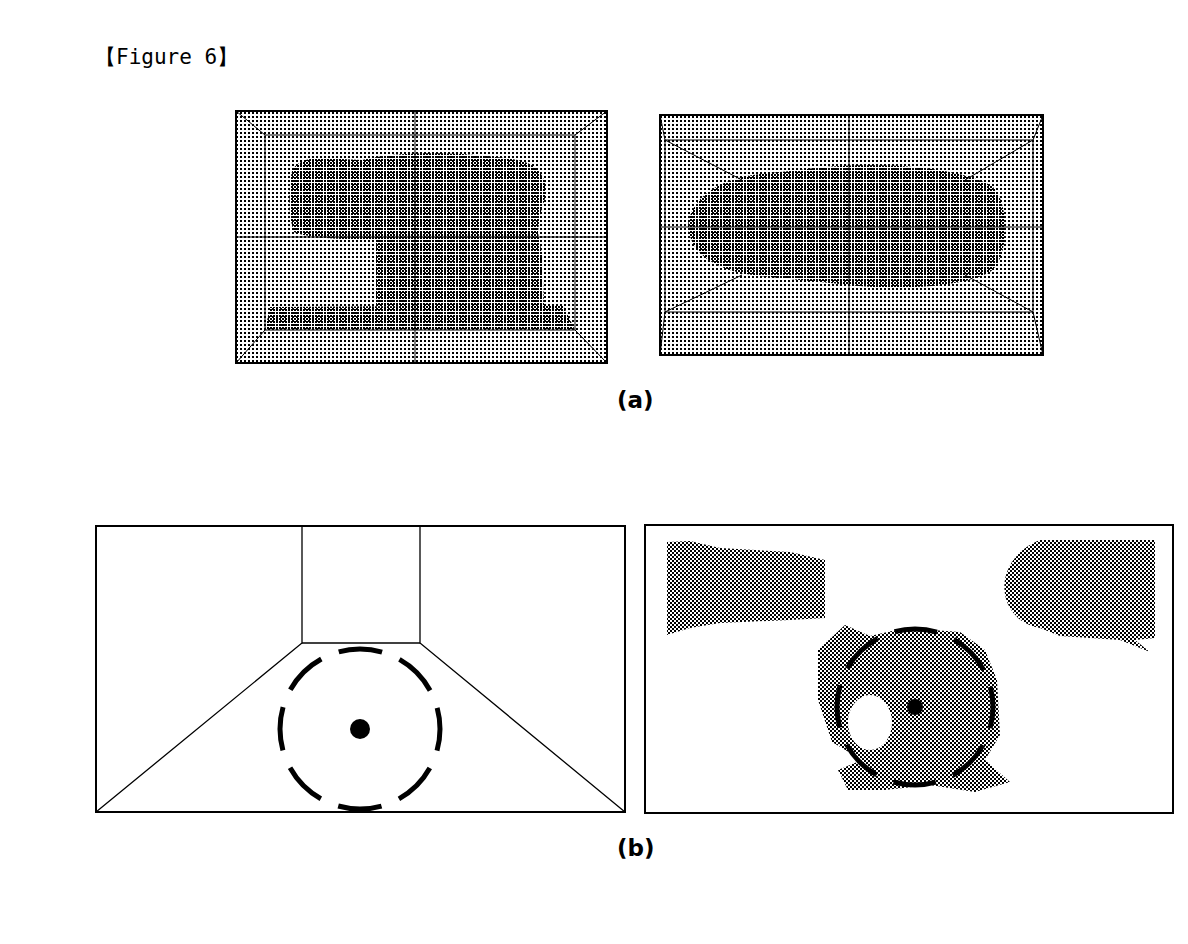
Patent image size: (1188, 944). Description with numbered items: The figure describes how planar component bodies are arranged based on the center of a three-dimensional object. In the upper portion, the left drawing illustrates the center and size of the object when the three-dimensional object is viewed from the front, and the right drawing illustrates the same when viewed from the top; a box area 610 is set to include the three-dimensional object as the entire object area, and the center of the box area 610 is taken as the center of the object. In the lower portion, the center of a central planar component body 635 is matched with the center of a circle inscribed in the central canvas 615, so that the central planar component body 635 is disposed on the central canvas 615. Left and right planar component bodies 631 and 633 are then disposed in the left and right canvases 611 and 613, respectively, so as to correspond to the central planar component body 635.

The box area 610 is at (258, 197).
The left canvas 611 is at (143, 560).
The right canvas 613 is at (468, 558).
The central canvas 615 is at (190, 782).
The left planar component body 631 is at (732, 590).
The right planar component body 633 is at (1052, 580).
The central planar component body 635 is at (933, 754).